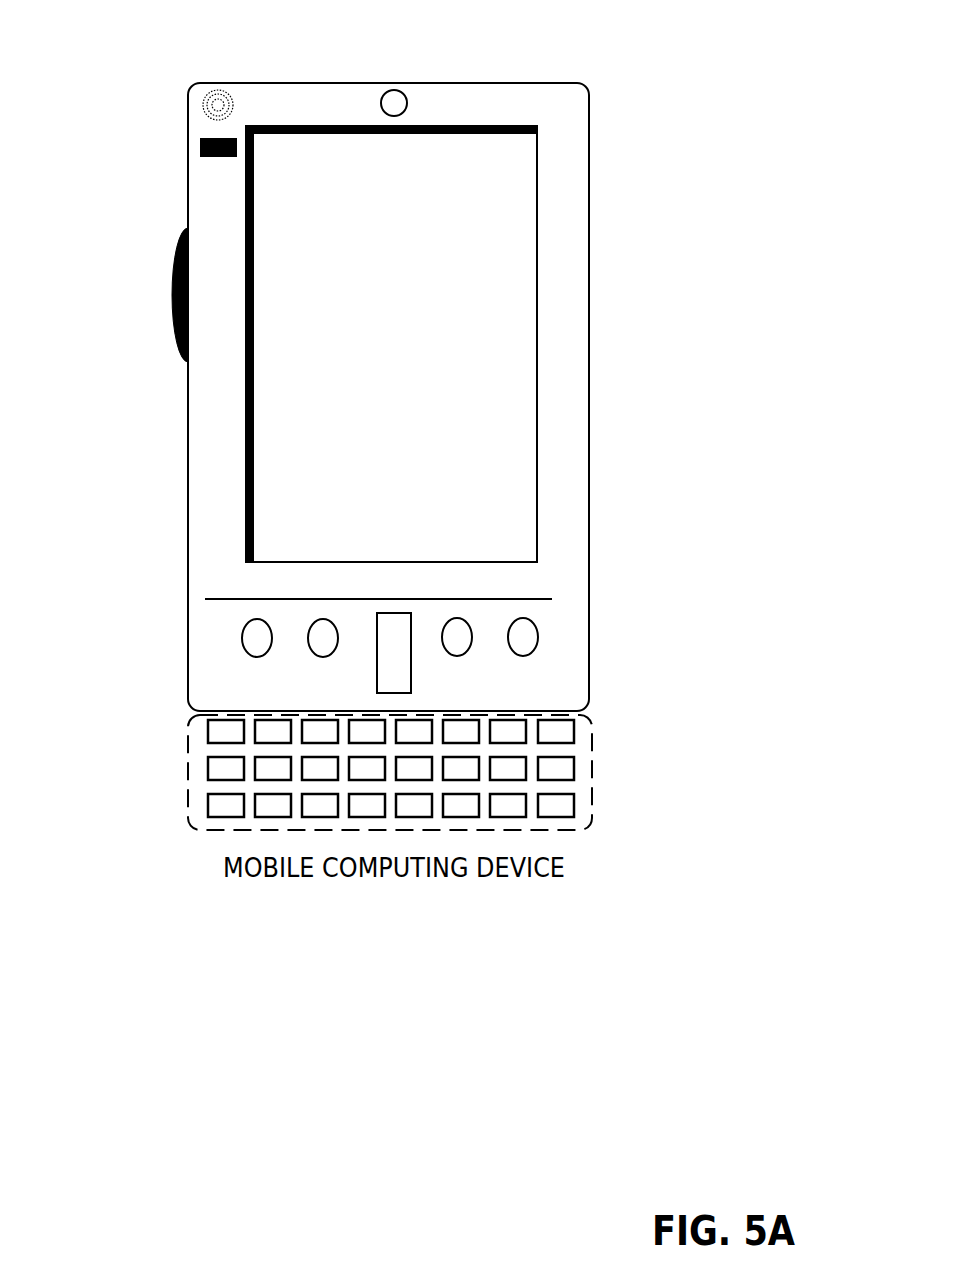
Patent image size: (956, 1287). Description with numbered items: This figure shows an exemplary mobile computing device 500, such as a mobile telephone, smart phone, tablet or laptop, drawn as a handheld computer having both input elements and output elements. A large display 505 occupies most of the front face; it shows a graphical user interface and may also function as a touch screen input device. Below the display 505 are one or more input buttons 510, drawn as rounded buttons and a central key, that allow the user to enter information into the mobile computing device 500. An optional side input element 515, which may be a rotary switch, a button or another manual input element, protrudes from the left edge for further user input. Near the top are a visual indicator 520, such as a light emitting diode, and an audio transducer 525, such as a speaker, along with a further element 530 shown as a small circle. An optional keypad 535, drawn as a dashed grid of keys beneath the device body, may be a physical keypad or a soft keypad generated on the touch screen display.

The mobile computing device 500 is at (590, 113).
The display 505 is at (285, 417).
The input buttons 510 is at (377, 662).
The side input element 515 is at (173, 270).
The visual indicator 520 is at (200, 148).
The audio transducer 525 is at (203, 105).
The camera 530 is at (394, 90).
The keypad 535 is at (197, 749).